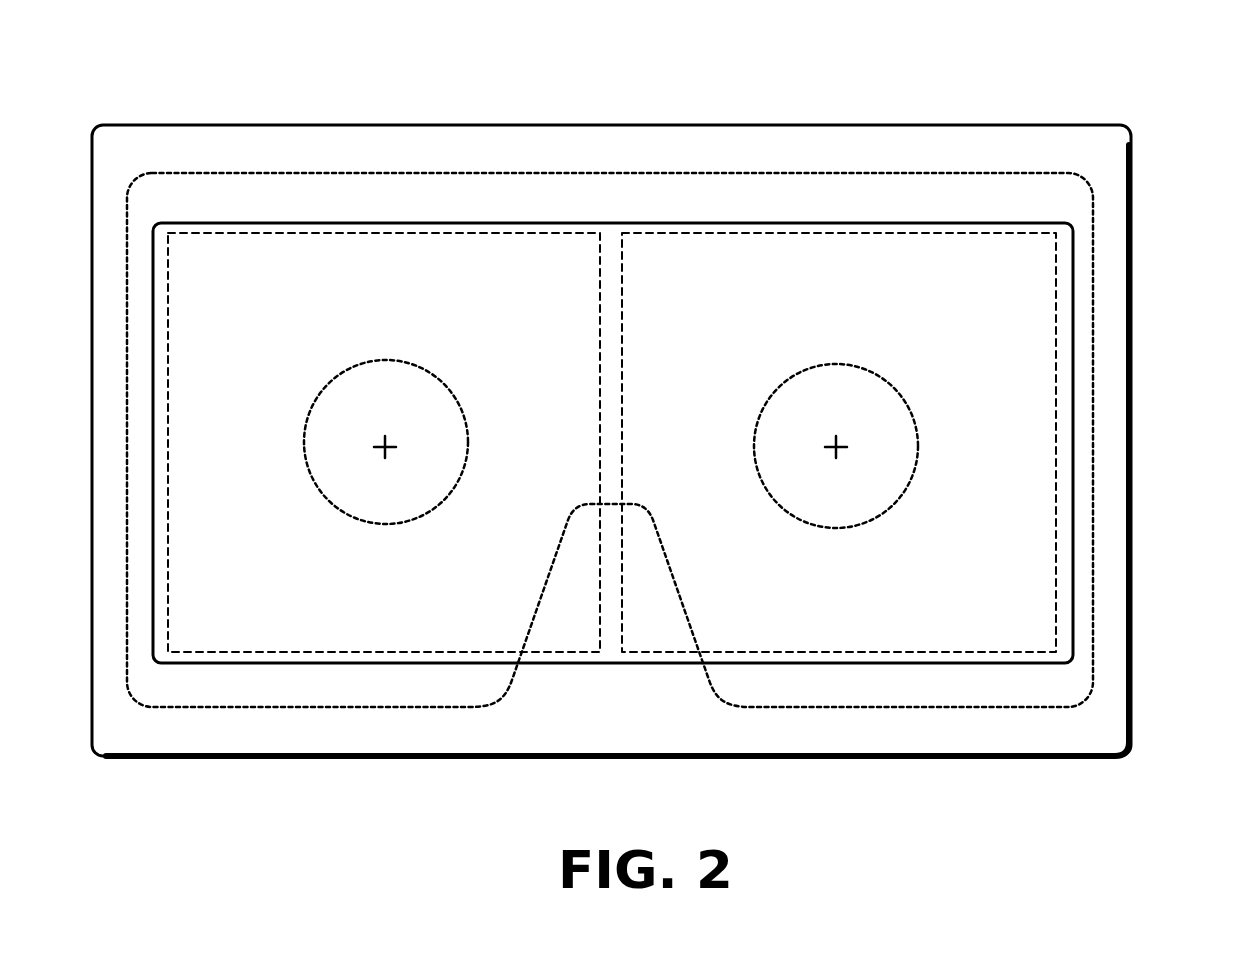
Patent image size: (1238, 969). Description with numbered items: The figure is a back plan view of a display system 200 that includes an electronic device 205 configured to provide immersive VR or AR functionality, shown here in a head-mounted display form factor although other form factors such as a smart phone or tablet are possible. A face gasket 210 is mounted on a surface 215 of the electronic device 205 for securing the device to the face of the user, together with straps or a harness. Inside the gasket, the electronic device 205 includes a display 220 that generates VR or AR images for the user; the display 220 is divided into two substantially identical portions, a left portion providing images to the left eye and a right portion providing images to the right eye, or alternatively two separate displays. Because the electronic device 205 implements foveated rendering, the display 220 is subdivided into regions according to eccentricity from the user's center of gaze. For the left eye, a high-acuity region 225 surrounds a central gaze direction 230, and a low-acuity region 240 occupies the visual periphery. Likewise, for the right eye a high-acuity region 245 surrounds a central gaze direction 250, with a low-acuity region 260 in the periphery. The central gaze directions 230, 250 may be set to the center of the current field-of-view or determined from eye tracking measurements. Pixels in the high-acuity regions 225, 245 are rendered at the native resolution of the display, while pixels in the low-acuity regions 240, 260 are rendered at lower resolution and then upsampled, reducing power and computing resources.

The display system 200 is at (1128, 75).
The electronic device 205 is at (836, 126).
The face gasket 210 is at (426, 709).
The surface 215 is at (191, 730).
The display 220 is at (687, 223).
The high-acuity region 225 is at (469, 422).
The central gaze direction 230 is at (387, 440).
The low-acuity region 240 is at (219, 261).
The high-acuity region 245 is at (919, 425).
The central gaze direction 250 is at (838, 440).
The low-acuity region 260 is at (671, 261).